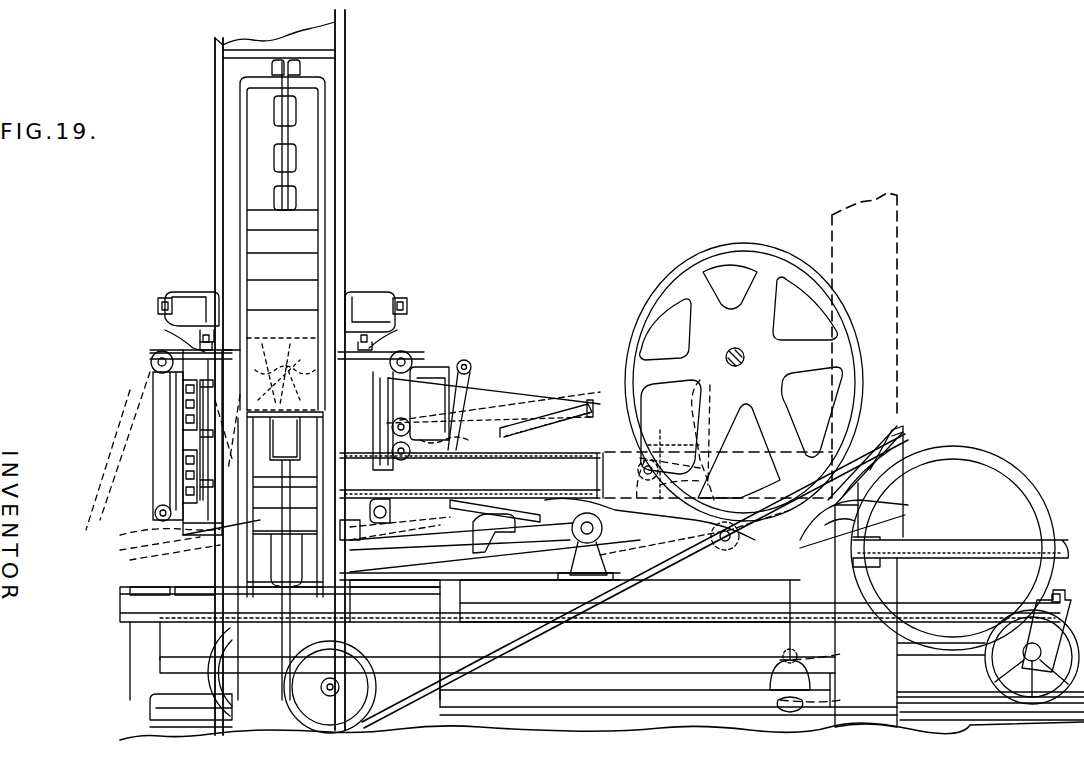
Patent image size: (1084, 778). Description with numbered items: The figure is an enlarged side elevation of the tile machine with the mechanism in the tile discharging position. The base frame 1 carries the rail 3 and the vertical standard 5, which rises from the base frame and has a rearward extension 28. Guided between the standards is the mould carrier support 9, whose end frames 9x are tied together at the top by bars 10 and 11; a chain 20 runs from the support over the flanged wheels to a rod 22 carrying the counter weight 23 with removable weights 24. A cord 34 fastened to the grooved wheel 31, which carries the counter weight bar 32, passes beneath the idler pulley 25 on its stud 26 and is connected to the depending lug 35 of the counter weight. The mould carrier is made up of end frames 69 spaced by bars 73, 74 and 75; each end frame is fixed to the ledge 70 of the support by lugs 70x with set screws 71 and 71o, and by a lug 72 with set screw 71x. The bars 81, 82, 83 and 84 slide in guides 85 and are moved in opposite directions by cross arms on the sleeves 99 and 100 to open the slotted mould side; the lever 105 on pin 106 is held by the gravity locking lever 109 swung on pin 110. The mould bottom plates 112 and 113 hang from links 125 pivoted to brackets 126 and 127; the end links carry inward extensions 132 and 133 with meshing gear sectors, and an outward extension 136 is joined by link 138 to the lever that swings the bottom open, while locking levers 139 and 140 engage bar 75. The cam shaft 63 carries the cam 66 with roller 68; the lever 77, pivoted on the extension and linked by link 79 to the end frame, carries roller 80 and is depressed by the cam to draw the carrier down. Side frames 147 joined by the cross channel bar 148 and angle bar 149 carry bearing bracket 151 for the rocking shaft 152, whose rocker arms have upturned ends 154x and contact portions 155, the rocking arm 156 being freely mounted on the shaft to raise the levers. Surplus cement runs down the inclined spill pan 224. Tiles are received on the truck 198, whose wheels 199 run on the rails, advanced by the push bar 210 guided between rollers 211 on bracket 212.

The vertical standard 5 is at (345, 32).
The rod 22 is at (290, 118).
The chain 20 is at (294, 158).
The removable weights 24 is at (300, 218).
The counter weight 23 is at (252, 345).
The sleeve 100 is at (286, 358).
The mould carrier support 9 is at (186, 290).
The bar 10 is at (162, 302).
The set screw 71 is at (204, 340).
The lug 70x is at (180, 350).
The ledge 70 is at (150, 362).
The inward extension 132 is at (152, 350).
The bar 81 is at (160, 395).
The bar 73 is at (180, 406).
The bar 82 is at (180, 422).
The end frame of the mould carrier 69 is at (180, 450).
The bar 83 is at (182, 460).
The bar 74 is at (180, 475).
The bar 84 is at (180, 492).
The guide 85 is at (180, 510).
The link 125 is at (185, 522).
The bracket 126 is at (225, 537).
The sleeve 99 is at (275, 487).
The depending lug 35 is at (283, 460).
The end frame of the mould carrier support 9x is at (354, 290).
The bar 11 is at (402, 296).
The set screw 71o is at (364, 340).
The inward extension 133 is at (380, 352).
The lug 72 is at (408, 352).
The set screw 71x is at (415, 352).
The outward extension 136 is at (455, 362).
The link 138 is at (383, 346).
The inclined spill pan 224 is at (483, 360).
The bar 75 is at (470, 398).
The lever 105 is at (475, 408).
The gravity locking lever 109 is at (548, 412).
The locking lever 140 is at (594, 420).
The rocking shaft 152 is at (596, 453).
The pin 106 is at (398, 470).
The pin 110 is at (480, 470).
The bracket 127 is at (408, 530).
The lever contact portion 155 is at (492, 535).
The bearing bracket 151 is at (585, 548).
The side frame 147 is at (585, 590).
The angle bar 149 is at (672, 578).
The cam 66 is at (866, 347).
The cam shaft 63 is at (746, 357).
The roller 68 is at (673, 451).
The upturned end 154x is at (698, 395).
The rocking arm 156 is at (690, 475).
The roller 80 is at (750, 500).
The rearward extension 28 is at (898, 435).
The cord 34 is at (906, 452).
The lever 77 is at (840, 523).
The grooved wheel 31 is at (1005, 490).
The counter weight bar 32 is at (998, 545).
The guiding roller 211 is at (808, 664).
The truck 198 is at (130, 600).
The plate 112 is at (265, 545).
The plate 113 is at (307, 537).
The locking lever 139 is at (470, 592).
The wheel 199 is at (160, 665).
The push bar 210 is at (650, 668).
The bracket 212 is at (770, 690).
The rail 3 is at (152, 704).
The base frame 1 is at (168, 738).
The link 79 is at (258, 590).
The idler pulley 25 is at (313, 707).
The stud 26 is at (334, 698).
The cross channel bar 148 is at (480, 530).